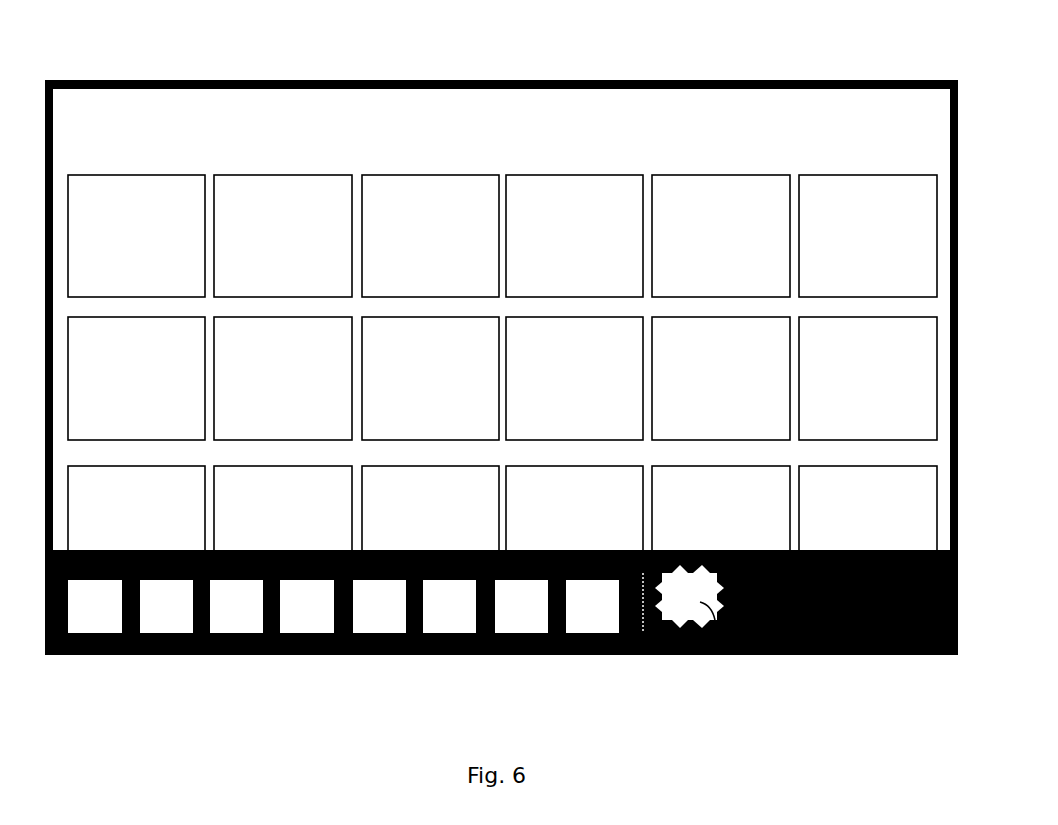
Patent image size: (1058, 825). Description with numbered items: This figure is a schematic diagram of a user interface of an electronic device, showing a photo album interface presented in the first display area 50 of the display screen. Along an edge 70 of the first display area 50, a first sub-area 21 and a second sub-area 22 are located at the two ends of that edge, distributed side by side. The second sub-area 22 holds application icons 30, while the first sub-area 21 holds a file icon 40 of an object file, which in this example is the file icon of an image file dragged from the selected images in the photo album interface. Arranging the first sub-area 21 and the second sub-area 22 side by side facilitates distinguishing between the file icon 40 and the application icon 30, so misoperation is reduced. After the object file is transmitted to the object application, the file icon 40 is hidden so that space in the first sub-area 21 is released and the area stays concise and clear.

The first display area 50 is at (568, 128).
The first sub-area 21 is at (875, 655).
The second sub-area 22 is at (501, 640).
The application icon 30 is at (103, 610).
The edge 70 is at (339, 655).
The file icon 40 is at (728, 655).